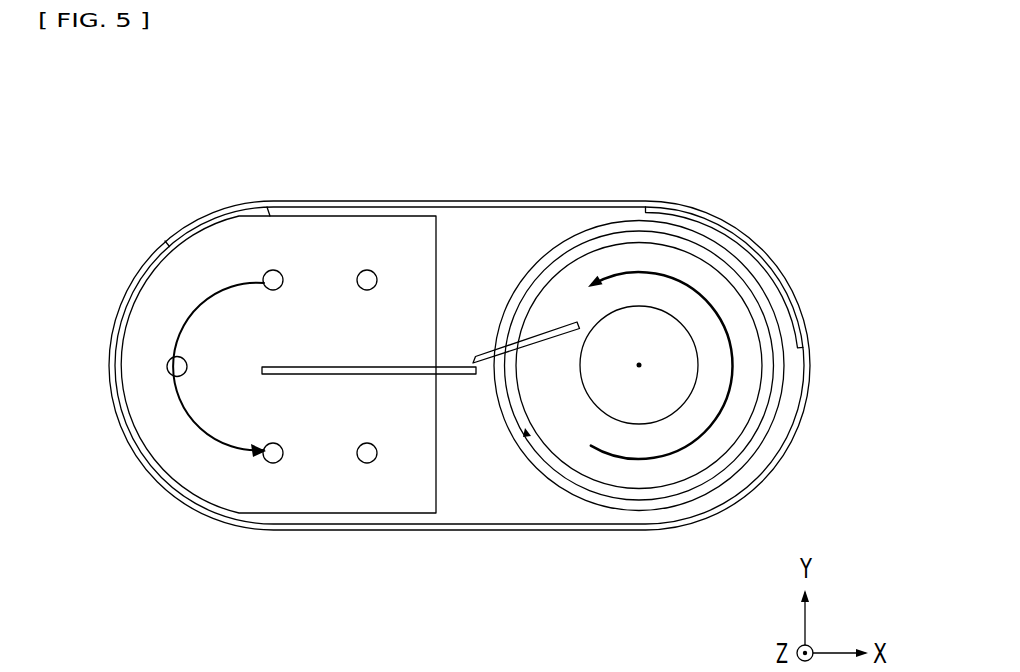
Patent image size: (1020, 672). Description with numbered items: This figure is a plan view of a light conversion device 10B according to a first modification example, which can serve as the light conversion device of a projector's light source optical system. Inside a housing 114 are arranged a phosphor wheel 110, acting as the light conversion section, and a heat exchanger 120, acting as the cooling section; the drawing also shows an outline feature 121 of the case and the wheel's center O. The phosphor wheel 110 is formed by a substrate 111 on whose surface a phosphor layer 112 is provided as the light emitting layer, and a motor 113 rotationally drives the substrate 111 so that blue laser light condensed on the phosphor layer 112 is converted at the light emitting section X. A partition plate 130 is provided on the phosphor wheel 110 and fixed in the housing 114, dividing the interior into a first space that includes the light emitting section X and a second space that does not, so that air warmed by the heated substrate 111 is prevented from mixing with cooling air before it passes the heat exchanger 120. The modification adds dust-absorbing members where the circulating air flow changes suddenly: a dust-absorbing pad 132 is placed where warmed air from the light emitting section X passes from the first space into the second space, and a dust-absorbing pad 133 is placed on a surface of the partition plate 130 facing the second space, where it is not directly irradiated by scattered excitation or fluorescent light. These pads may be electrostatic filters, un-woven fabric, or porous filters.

The light conversion device 10B is at (725, 101).
The phosphor wheel 110 is at (697, 220).
The substrate 111 is at (763, 263).
The phosphor layer 112 is at (762, 413).
The motor 113 is at (640, 424).
The housing 114 is at (475, 201).
The heat exchanger 120 is at (267, 208).
The case wall 121 is at (169, 246).
The partition plate 130 is at (464, 375).
The dust-absorbing pad 132 is at (541, 325).
The dust-absorbing pad 133 is at (653, 202).
The rotation center O is at (639, 365).
The light emitting section X is at (527, 434).